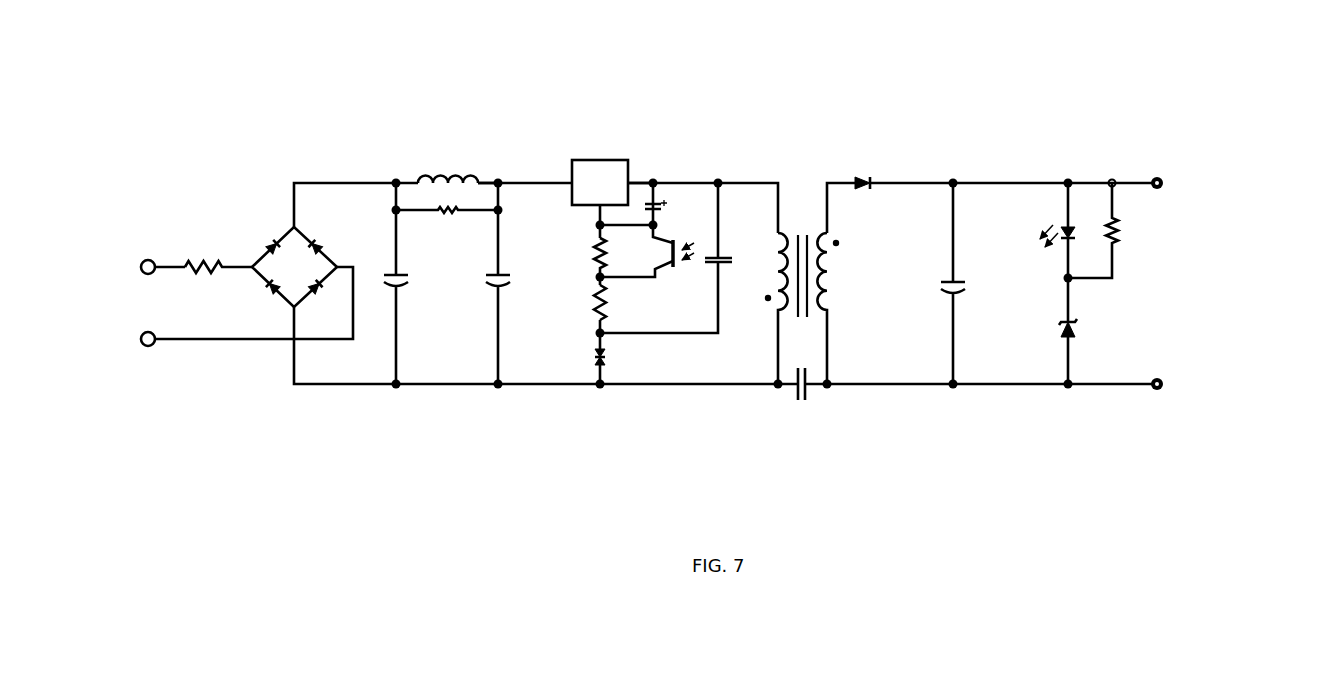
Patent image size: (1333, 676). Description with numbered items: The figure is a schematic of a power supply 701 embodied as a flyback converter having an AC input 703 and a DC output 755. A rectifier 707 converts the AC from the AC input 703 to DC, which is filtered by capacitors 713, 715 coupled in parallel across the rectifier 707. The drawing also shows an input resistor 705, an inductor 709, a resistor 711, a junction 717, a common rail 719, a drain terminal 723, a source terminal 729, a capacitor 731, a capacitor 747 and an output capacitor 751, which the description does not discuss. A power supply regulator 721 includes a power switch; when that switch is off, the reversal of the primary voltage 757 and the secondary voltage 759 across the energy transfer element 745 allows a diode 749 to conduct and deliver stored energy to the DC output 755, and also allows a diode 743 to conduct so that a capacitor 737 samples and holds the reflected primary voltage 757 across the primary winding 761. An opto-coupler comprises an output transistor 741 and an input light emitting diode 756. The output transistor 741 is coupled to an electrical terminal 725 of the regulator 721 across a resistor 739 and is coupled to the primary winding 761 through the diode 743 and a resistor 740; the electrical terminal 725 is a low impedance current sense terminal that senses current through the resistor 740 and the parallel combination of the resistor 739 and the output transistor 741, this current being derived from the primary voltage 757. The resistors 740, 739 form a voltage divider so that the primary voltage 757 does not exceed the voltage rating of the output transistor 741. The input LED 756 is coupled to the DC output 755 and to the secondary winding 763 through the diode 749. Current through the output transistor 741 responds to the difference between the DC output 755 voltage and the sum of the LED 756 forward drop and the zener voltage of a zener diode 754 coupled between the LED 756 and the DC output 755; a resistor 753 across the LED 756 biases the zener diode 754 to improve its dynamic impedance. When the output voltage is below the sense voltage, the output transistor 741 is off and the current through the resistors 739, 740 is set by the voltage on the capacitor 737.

The power supply 701 is at (1185, 34).
The AC input 703 is at (92, 278).
The input resistor 705 is at (188, 260).
The rectifier 707 is at (272, 232).
The inductor 709 is at (432, 180).
The resistor 711 is at (463, 225).
The capacitor 713 is at (407, 288).
The capacitor 715 is at (508, 288).
The node 717 is at (488, 178).
The ground rail 719 is at (507, 390).
The power supply regulator 721 is at (588, 158).
The drain terminal 723 is at (547, 162).
The electrical terminal 725 is at (583, 218).
The source terminal 729 is at (640, 162).
The capacitor 731 is at (665, 208).
The capacitor 737 is at (733, 263).
The resistor 739 is at (583, 262).
The resistor 740 is at (583, 312).
The output transistor 741 is at (670, 277).
The diode 743 is at (606, 372).
The energy transfer element 745 is at (820, 270).
The capacitor 747 is at (802, 407).
The diode 749 is at (872, 182).
The output capacitor 751 is at (972, 295).
The resistor 753 is at (1115, 248).
The zener diode 754 is at (1073, 333).
The DC output 755 is at (1255, 263).
The input light emitting diode 756 is at (1033, 242).
The voltage V1 757 is at (752, 278).
The voltage V2 759 is at (875, 258).
The primary winding 761 is at (767, 310).
The secondary winding 763 is at (840, 315).